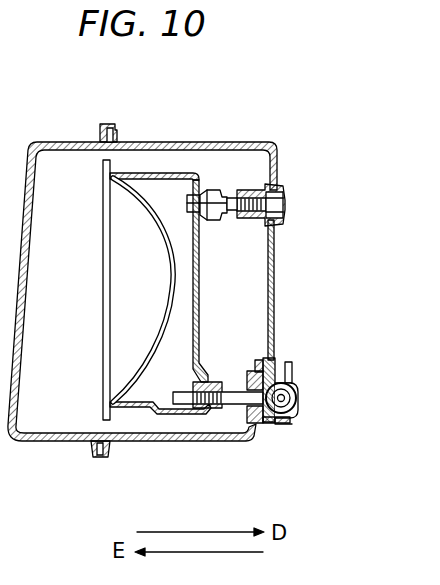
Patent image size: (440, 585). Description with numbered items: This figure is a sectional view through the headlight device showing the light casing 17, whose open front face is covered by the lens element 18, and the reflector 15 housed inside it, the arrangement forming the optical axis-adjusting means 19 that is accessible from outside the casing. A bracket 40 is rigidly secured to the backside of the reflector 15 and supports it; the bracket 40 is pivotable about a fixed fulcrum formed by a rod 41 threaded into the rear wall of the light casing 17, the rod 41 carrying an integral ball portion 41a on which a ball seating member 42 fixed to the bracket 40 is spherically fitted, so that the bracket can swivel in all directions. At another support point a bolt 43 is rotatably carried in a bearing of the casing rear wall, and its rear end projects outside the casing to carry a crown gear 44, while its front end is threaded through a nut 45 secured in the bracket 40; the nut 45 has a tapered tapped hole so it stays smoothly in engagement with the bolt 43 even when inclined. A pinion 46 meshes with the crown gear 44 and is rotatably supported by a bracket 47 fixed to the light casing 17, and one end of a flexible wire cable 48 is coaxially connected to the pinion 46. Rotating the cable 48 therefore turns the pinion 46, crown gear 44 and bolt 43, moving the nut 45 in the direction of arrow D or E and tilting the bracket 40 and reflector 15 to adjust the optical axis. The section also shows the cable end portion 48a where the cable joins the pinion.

The reflector 15 is at (108, 362).
The light casing 17 is at (273, 252).
The lens element 18 is at (58, 142).
The optical axis-adjusting means 19 is at (221, 167).
The bracket 40 is at (197, 323).
The rod 41 is at (229, 202).
The ball portion 41a is at (205, 188).
The ball seating member 42 is at (199, 243).
The bolt 43 is at (222, 410).
The crown gear 44 is at (273, 300).
The nut 45 is at (183, 413).
The pinion 46 is at (297, 393).
The bracket 47 is at (293, 420).
The flexible wire cable 48 is at (270, 362).
The support flange 48a is at (273, 428).